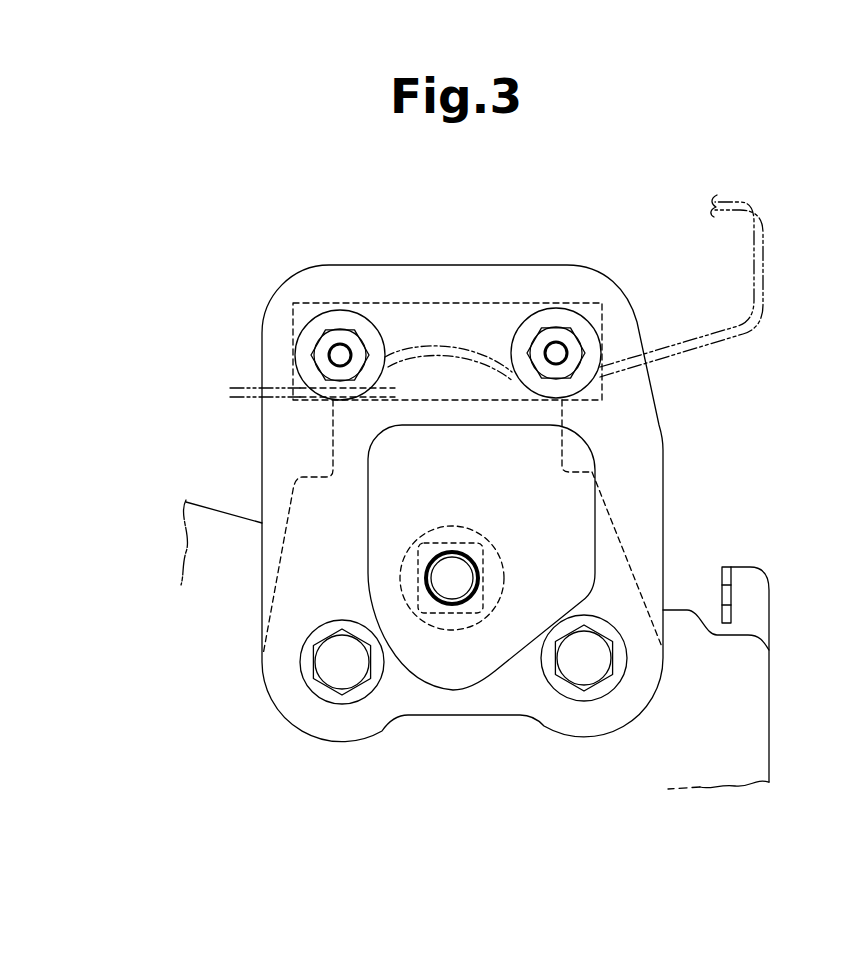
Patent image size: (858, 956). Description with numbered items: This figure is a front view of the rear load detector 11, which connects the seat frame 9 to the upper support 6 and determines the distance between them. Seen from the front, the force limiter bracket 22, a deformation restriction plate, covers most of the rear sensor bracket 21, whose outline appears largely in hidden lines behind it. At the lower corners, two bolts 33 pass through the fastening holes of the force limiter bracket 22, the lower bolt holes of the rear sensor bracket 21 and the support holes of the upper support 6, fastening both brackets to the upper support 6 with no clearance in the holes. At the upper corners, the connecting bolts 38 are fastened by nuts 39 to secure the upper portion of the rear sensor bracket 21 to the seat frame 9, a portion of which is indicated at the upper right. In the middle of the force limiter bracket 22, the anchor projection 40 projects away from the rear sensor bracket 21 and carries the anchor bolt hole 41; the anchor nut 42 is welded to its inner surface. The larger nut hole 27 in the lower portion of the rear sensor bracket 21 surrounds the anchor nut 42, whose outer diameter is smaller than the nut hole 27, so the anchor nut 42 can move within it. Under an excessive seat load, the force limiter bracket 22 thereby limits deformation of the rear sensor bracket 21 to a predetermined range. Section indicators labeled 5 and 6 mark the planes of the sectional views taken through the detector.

The rear load detector 11 is at (229, 311).
The force limiter bracket 22 is at (503, 263).
The rear sensor bracket 21 is at (617, 530).
The seat frame 9 is at (768, 297).
The nut 39 is at (356, 343).
The connecting bolt 38 is at (346, 358).
The anchor projection 40 is at (368, 511).
The nut hole 27 is at (478, 532).
The anchor bolt hole 41 is at (478, 574).
The anchor nut 42 is at (455, 615).
The bolt 33 is at (332, 675).
The upper support 6 is at (752, 716).
The section line 5- 5 is at (342, 258).